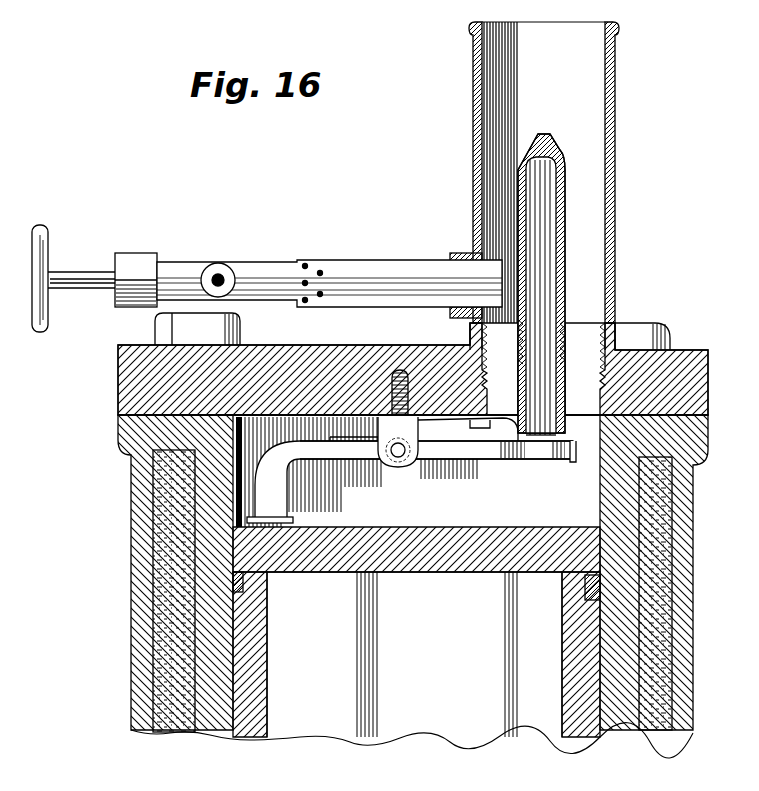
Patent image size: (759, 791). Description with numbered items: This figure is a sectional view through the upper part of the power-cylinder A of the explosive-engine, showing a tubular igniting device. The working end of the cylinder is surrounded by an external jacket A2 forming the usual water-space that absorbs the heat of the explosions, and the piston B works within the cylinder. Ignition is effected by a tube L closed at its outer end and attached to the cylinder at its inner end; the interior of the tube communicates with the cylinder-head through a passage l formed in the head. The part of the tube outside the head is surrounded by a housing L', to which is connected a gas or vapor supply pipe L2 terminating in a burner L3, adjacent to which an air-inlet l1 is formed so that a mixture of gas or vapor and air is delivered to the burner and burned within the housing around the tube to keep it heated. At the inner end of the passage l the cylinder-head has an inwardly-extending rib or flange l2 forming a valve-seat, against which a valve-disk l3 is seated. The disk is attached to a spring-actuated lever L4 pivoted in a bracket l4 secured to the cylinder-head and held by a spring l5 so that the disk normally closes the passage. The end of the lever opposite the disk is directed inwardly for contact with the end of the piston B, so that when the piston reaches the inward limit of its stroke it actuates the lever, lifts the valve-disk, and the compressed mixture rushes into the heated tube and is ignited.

The power-cylinder A is at (118, 429).
The external cylinder or jacket A2 is at (153, 503).
The piston B is at (414, 654).
The housing L' is at (560, 172).
The tube L is at (578, 283).
The passage l is at (548, 395).
The gas or vapor supply pipe L2 is at (218, 272).
The air-inlet l1 is at (320, 268).
The burner L3 is at (470, 285).
The spring l5 is at (350, 441).
The bracket l4 is at (402, 468).
The spring-actuated lever L4 is at (436, 462).
The valve-disk l3 is at (548, 455).
The inwardly-extending rib or flange l2 is at (573, 462).